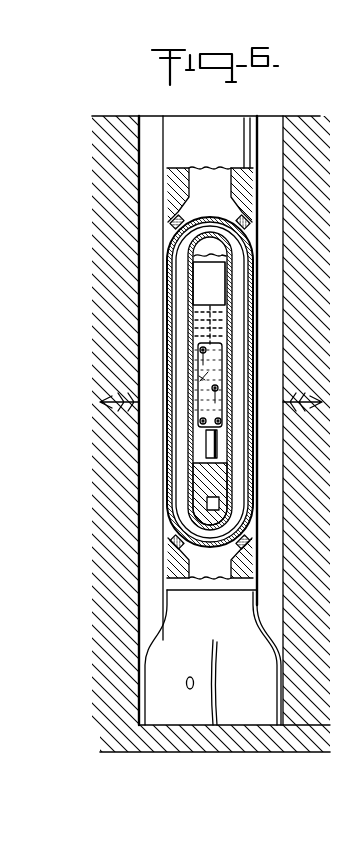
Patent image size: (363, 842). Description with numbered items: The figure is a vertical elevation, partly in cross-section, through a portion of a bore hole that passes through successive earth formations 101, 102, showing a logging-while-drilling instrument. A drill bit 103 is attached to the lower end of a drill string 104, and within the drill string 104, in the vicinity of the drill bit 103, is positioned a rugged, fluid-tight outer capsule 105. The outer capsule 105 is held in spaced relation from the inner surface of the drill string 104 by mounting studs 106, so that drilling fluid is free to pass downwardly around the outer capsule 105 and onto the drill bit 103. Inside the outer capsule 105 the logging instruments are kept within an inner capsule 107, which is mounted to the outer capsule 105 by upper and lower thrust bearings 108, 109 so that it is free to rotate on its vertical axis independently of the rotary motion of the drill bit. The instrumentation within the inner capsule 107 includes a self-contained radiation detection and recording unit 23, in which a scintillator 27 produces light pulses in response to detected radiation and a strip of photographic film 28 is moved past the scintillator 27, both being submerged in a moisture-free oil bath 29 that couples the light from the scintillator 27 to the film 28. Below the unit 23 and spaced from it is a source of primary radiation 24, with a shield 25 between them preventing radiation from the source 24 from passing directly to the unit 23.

The earth formation 101 is at (330, 191).
The earth formation 102 is at (330, 492).
The drill bit 103 is at (265, 672).
The drill string 104 is at (256, 250).
The outer capsule 105 is at (248, 285).
The mounting studs 106 is at (250, 226).
The inner capsule 107 is at (170, 250).
The upper thrust bearing 108 is at (210, 230).
The lower thrust bearing 109 is at (210, 558).
The self-contained radiation detection and recording unit 23 is at (196, 316).
The source of primary radiation 24 is at (207, 503).
The shield 25 is at (200, 470).
The scintillator 27 is at (218, 446).
The photographic film 28 is at (222, 392).
The oil bath 29 is at (224, 332).